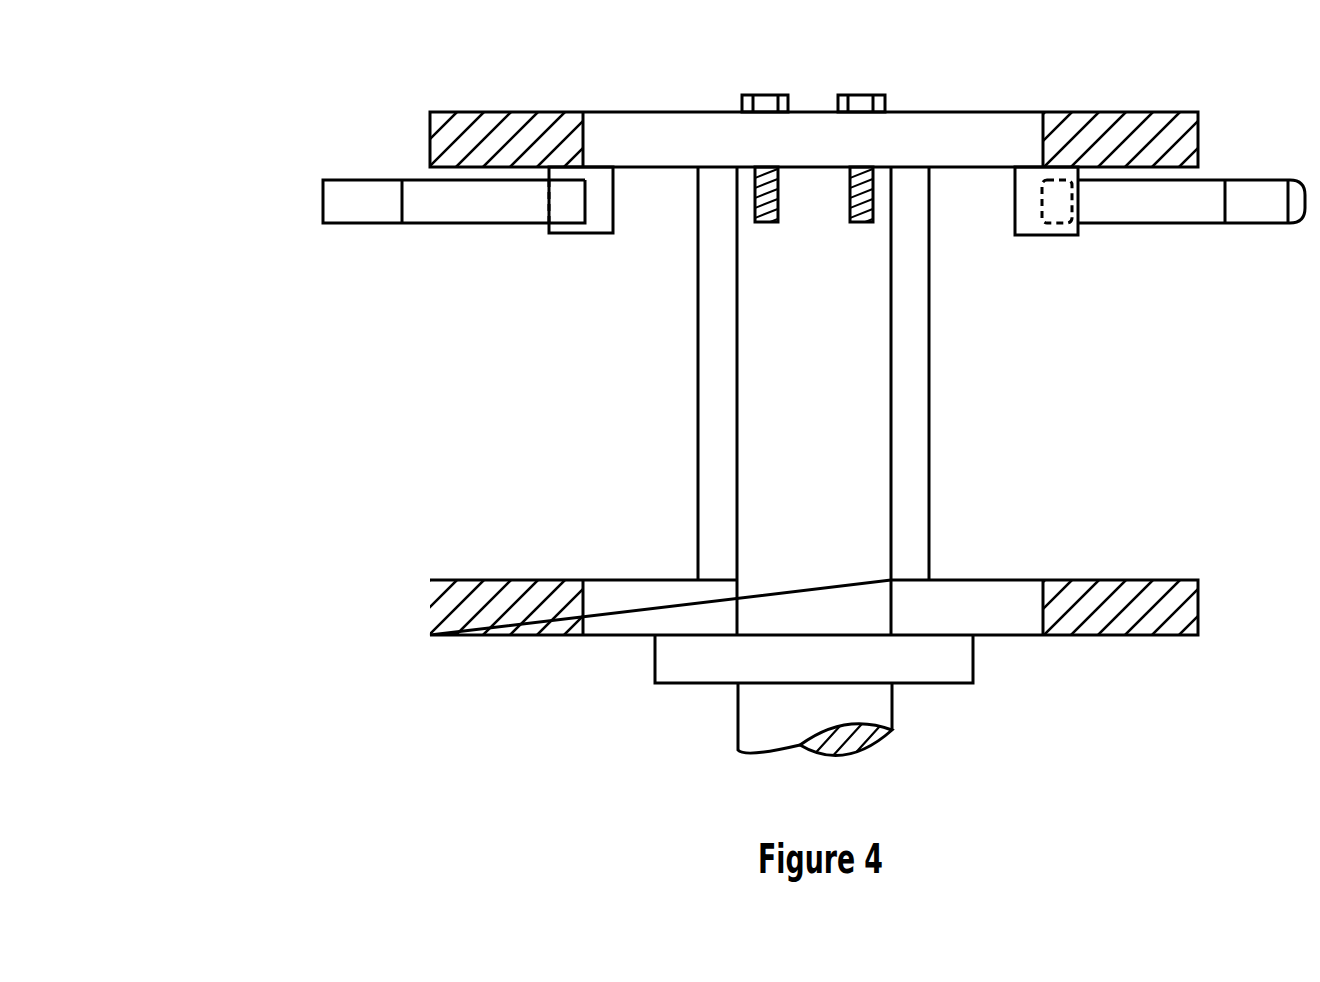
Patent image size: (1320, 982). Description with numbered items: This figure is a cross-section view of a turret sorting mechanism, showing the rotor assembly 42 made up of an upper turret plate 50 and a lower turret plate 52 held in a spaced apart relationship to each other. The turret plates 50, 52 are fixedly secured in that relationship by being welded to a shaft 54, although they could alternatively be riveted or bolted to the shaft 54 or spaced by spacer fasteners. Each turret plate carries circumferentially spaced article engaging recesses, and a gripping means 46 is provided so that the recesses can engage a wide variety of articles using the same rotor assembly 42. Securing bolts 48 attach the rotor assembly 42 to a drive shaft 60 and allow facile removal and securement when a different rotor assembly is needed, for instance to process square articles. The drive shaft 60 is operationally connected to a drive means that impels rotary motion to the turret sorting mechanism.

The rotor assembly 42 is at (263, 113).
The gripping means 46 is at (1128, 212).
The securing bolts 48 is at (858, 100).
The upper turret plate 50 is at (1133, 122).
The lower turret plate 52 is at (990, 595).
The shaft 54 is at (918, 297).
The drive shaft 60 is at (865, 698).